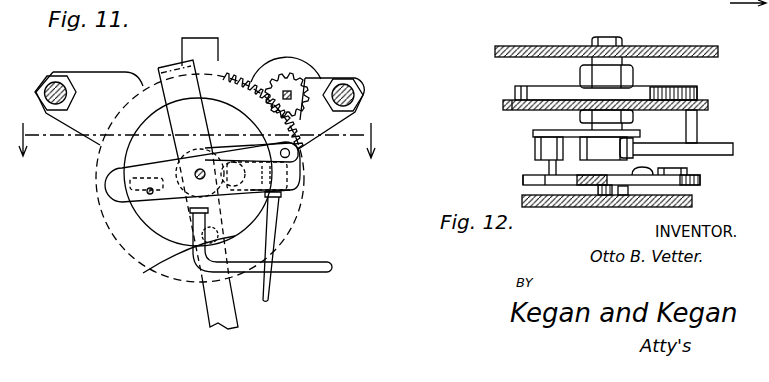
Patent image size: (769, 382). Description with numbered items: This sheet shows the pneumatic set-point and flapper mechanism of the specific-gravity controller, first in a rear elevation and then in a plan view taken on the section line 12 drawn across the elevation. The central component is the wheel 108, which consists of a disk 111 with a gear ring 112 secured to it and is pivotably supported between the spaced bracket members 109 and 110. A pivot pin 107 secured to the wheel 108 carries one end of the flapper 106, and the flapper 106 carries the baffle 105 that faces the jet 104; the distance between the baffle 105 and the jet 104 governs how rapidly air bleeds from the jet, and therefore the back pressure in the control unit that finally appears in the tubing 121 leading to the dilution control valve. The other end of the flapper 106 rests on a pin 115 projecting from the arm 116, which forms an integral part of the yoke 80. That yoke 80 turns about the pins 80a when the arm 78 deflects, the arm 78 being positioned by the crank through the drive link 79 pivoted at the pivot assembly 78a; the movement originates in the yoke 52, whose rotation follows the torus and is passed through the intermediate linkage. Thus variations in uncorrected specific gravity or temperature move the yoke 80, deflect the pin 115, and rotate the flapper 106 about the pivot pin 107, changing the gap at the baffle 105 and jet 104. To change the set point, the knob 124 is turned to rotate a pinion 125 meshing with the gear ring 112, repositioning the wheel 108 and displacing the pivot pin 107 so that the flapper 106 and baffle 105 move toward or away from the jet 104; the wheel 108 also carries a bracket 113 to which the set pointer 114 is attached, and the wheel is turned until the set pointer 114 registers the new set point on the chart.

In FIG. 11, the section line 12— 12 is at (197, 133).
In FIG. 11, the yoke 52 is at (203, 38).
In FIG. 11, the arm 78 is at (293, 197).
In FIG. 12, the arm 78 is at (700, 183).
In FIG. 11, the pivot assembly 78a is at (297, 182).
In FIG. 12, the pivot assembly 78a is at (690, 166).
In FIG. 11, the drive link 79 is at (268, 296).
In FIG. 11, the yoke 80 is at (173, 63).
In FIG. 12, the yoke 80 is at (572, 207).
In FIG. 12, the pins 80a is at (624, 198).
In FIG. 11, the jet 104 is at (143, 273).
In FIG. 12, the jet 104 is at (710, 145).
In FIG. 11, the baffle 105 is at (183, 202).
In FIG. 12, the baffle 105 is at (627, 136).
In FIG. 11, the flapper 106 is at (257, 143).
In FIG. 12, the flapper 106 is at (537, 132).
In FIG. 11, the pivot pin 107 is at (298, 154).
In FIG. 12, the pivot pin 107 is at (700, 116).
In FIG. 11, the wheel 108 is at (97, 168).
In FIG. 12, the wheel 108 is at (517, 88).
In FIG. 11, the bracket member 109 is at (92, 77).
In FIG. 12, the bracket member 109 is at (553, 37).
In FIG. 12, the bracket member 110 is at (605, 196).
In FIG. 11, the disk 111 is at (138, 147).
In FIG. 12, the disk 111 is at (697, 92).
In FIG. 11, the gear ring 112 is at (215, 80).
In FIG. 12, the gear ring 112 is at (503, 104).
In FIG. 11, the bracket 113 is at (277, 243).
In FIG. 11, the set pointer 114 is at (207, 293).
In FIG. 11, the pin 115 is at (146, 192).
In FIG. 12, the pin 115 is at (547, 163).
In FIG. 11, the arm 116 is at (120, 183).
In FIG. 12, the arm 116 is at (540, 173).
In FIG. 12, the tubing 121 is at (695, 7).
In FIG. 11, the knob 124 is at (305, 64).
In FIG. 11, the pinion 125 is at (305, 80).